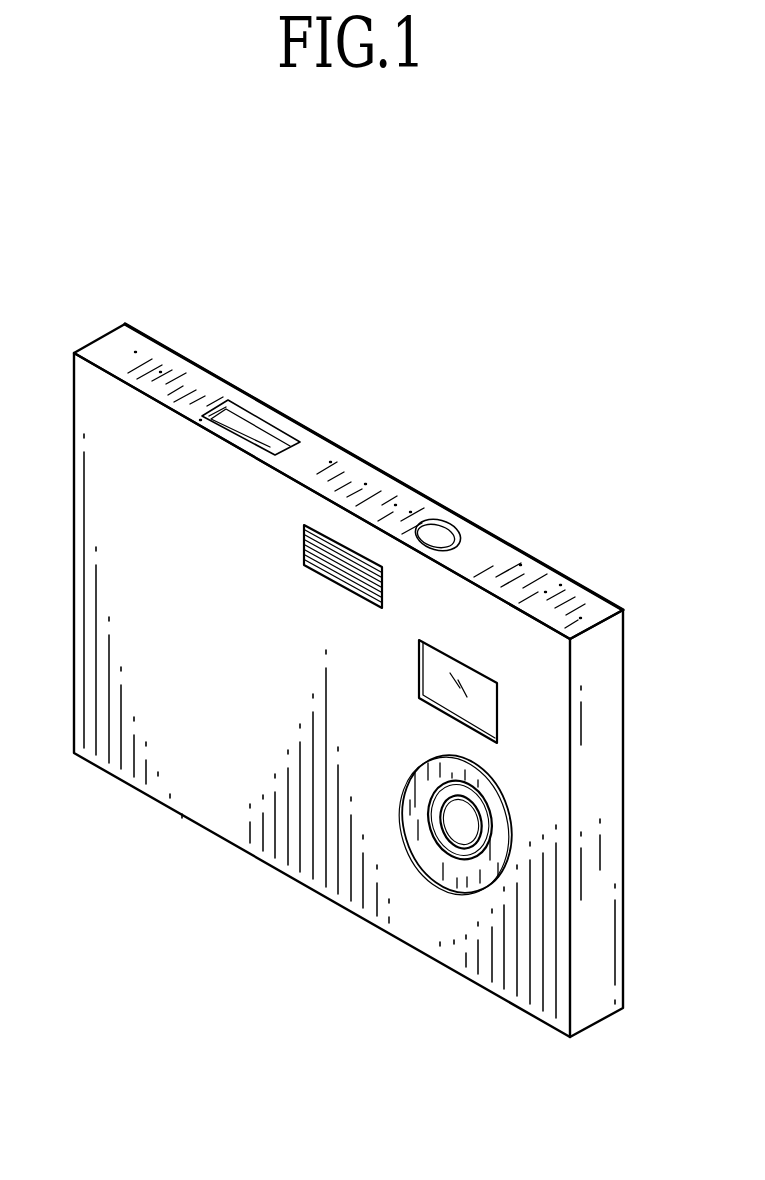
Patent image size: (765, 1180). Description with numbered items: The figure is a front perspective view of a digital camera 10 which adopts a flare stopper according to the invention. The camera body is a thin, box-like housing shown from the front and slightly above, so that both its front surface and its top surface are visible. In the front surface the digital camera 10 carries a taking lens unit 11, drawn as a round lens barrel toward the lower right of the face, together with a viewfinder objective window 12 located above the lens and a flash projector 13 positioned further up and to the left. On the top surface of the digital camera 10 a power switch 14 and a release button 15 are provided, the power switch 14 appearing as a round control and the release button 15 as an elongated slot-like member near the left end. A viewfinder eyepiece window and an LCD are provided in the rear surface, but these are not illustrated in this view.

The digital camera 10 is at (375, 463).
The taking lens unit 11 is at (463, 828).
The viewfinder objective window 12 is at (440, 673).
The flash projector 13 is at (327, 568).
The power switch 14 is at (444, 530).
The release button 15 is at (253, 434).